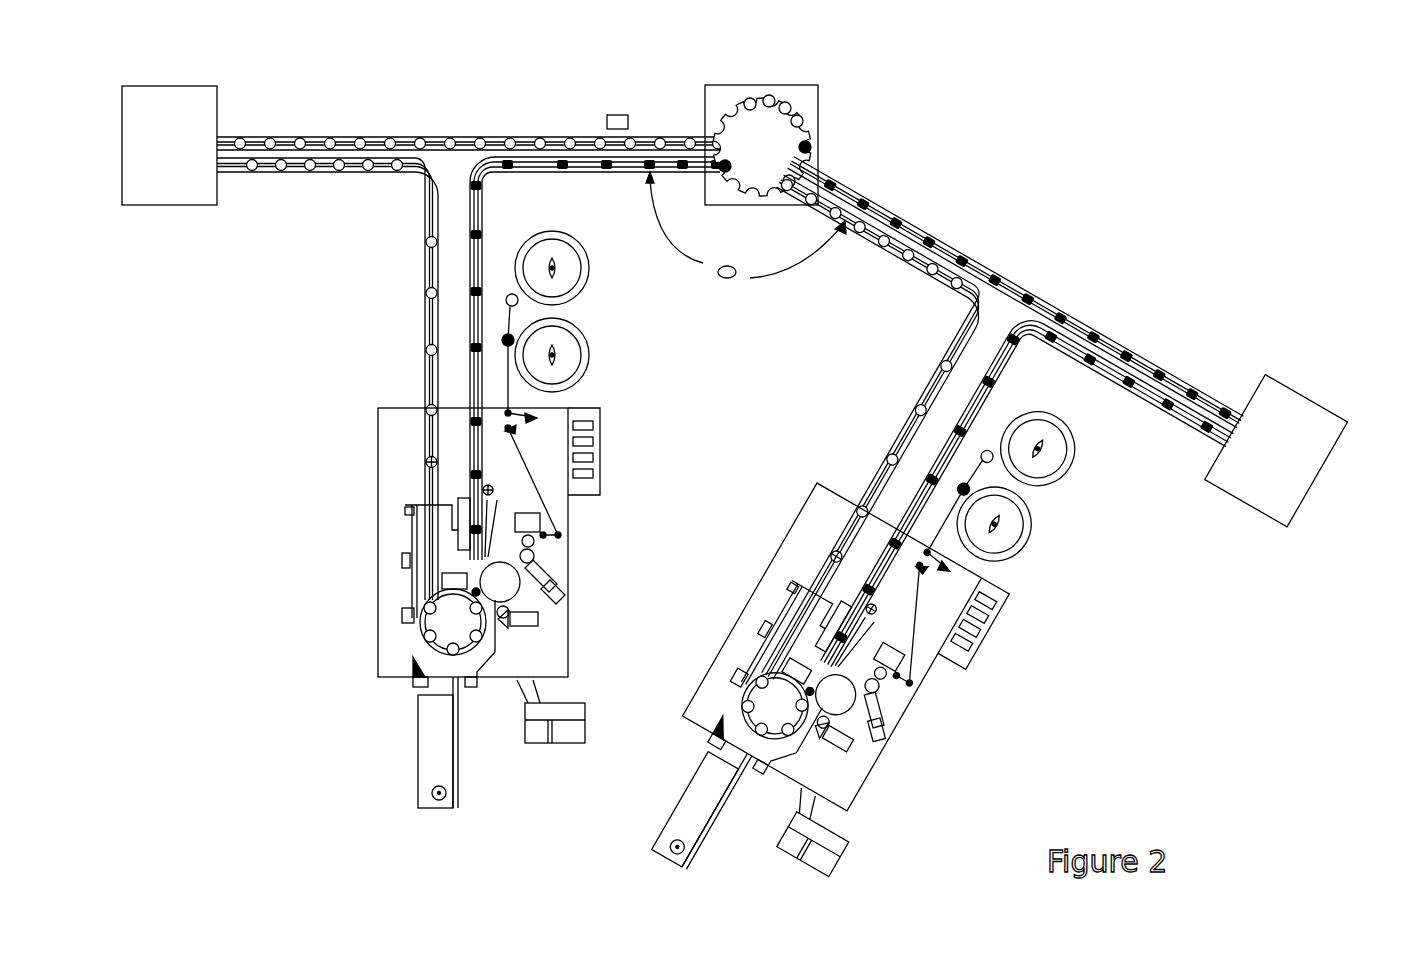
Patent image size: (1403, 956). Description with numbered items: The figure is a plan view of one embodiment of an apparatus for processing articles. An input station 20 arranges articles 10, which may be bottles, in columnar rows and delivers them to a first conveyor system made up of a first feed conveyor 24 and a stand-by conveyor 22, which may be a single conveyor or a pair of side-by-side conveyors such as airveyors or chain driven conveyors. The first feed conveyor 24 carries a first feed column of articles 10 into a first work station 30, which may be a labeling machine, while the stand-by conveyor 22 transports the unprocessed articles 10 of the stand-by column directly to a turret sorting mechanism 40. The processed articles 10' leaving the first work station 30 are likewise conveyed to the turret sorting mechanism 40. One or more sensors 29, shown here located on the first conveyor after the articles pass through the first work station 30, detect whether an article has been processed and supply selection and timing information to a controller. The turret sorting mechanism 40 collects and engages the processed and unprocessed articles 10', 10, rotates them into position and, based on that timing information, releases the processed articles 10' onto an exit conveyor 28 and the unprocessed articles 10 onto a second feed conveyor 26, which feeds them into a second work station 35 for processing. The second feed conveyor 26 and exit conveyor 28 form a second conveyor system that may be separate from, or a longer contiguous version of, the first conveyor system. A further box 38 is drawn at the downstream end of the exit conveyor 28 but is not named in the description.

The articles 10 is at (266, 112).
The processed articles 10' is at (851, 422).
The input station 20 is at (155, 100).
The stand-by conveyor 22 is at (377, 143).
The first feed conveyor 24 is at (325, 163).
The second feed conveyor 26 is at (868, 232).
The exit conveyor 28 is at (913, 237).
The sensor 29 is at (612, 213).
The first work station 30 is at (395, 468).
The second work station 35 is at (873, 745).
The collection station 38 is at (1307, 413).
The turret sorting mechanism 40 is at (802, 93).